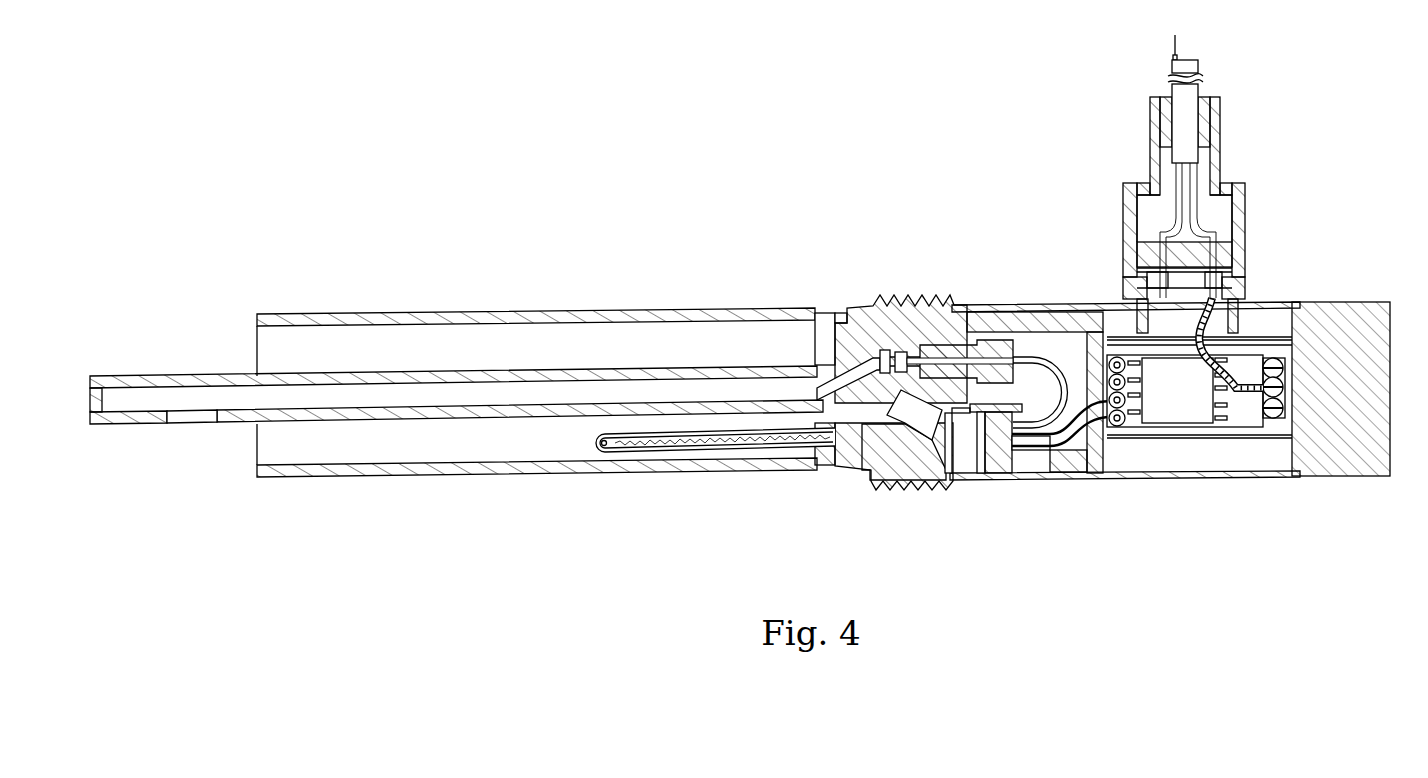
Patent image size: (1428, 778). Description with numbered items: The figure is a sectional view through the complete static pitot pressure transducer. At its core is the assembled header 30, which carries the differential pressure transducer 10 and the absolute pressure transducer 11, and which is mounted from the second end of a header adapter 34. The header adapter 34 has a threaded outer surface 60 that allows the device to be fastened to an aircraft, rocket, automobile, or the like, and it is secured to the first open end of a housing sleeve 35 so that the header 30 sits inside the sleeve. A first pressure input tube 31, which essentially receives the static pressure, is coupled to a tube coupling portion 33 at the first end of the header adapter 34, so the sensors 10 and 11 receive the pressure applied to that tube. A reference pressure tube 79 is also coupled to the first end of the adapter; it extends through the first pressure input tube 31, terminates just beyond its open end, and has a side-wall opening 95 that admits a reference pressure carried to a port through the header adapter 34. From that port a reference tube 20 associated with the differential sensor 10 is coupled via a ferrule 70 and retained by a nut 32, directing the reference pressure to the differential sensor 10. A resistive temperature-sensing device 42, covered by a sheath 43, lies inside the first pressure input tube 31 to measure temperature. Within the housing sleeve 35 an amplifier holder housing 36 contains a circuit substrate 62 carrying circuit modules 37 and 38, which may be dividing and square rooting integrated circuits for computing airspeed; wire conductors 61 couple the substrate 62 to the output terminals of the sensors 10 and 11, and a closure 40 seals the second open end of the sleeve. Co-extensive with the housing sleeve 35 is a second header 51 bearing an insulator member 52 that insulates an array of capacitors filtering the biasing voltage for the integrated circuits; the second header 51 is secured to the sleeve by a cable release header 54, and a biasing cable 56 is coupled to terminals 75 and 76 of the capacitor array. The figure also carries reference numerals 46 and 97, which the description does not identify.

The differential pressure transducer 10 is at (955, 460).
The absolute pressure transducer 11 is at (962, 478).
The reference tube 20 is at (1040, 356).
The assembled header 30 is at (1000, 479).
The first pressure input tube 31 is at (291, 313).
The nut 32 is at (998, 311).
The tube coupling portion 33 is at (848, 340).
The header adapter 34 is at (897, 470).
The housing sleeve 35 is at (1280, 478).
The amplifier holder housing 36 is at (1062, 472).
The circuit module 37 is at (1196, 436).
The circuit module 38 is at (1158, 414).
The closure 40 is at (1357, 440).
The resistive temperature-sensing device 42 is at (640, 446).
The sheath 43 is at (588, 453).
The passage 46 is at (833, 354).
The second header 51 is at (1236, 256).
The insulator member 52 is at (1184, 278).
The cable release header 54 is at (1246, 229).
The biasing cable 56 is at (1200, 66).
The threaded outer surface 60 is at (921, 298).
The wire conductors 61 is at (1085, 466).
The circuit substrate 62 is at (1228, 433).
The ferrule 70 is at (887, 350).
The terminal 75 is at (1223, 204).
The terminal 76 is at (1158, 210).
The reference pressure tube 79 is at (135, 375).
The opening 95 is at (190, 424).
The end piece 97 is at (867, 476).